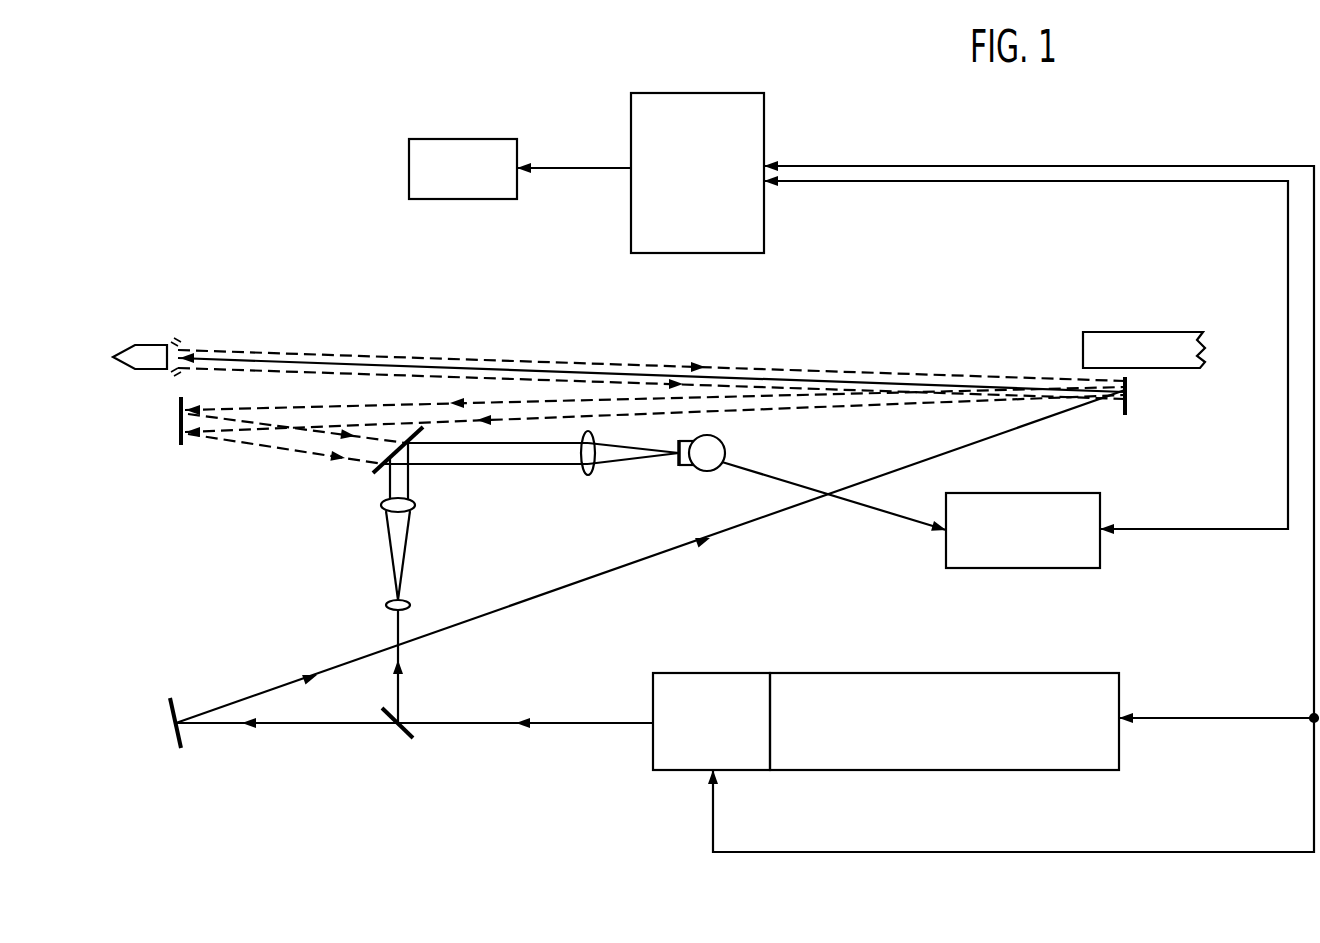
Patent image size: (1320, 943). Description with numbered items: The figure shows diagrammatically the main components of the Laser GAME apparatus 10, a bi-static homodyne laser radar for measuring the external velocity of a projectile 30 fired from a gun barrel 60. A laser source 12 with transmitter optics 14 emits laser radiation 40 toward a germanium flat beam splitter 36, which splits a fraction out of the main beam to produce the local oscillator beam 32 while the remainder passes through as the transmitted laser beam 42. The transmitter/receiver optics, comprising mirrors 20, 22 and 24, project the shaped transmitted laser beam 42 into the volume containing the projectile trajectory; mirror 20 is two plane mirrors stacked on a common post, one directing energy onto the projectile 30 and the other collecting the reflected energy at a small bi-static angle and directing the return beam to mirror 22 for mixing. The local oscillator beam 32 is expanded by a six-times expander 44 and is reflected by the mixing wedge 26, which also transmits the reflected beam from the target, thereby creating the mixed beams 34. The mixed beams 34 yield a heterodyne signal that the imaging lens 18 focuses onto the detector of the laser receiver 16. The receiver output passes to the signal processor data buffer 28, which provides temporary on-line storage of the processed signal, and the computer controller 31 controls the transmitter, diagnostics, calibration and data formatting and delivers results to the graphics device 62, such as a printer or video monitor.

The Laser GAME apparatus 10 is at (300, 180).
The laser source 12 is at (1090, 757).
The transmitter optics 14 is at (680, 758).
The laser receiver 16 is at (728, 447).
The imaging lens 18 is at (590, 477).
The common transmitter/receiver mirror 20 is at (1128, 410).
The transmitter/receiver mirror 22 is at (180, 440).
The transmitter/receiver mirror 24 is at (171, 742).
The mixing wedge 26 is at (378, 468).
The signal processor data buffer 28 is at (970, 568).
The projectile 30 is at (152, 345).
The computer controller 31 is at (766, 112).
The local oscillator beam 32 is at (402, 682).
The mixed beams 34 is at (470, 466).
The germanium flat beam splitter 36 is at (401, 738).
The laser radiation 40 is at (583, 727).
The transmitted laser beam 42 is at (287, 727).
The 6X beam expander 44 is at (420, 498).
The gun barrel 60 is at (1122, 332).
The graphics device 62 is at (503, 139).